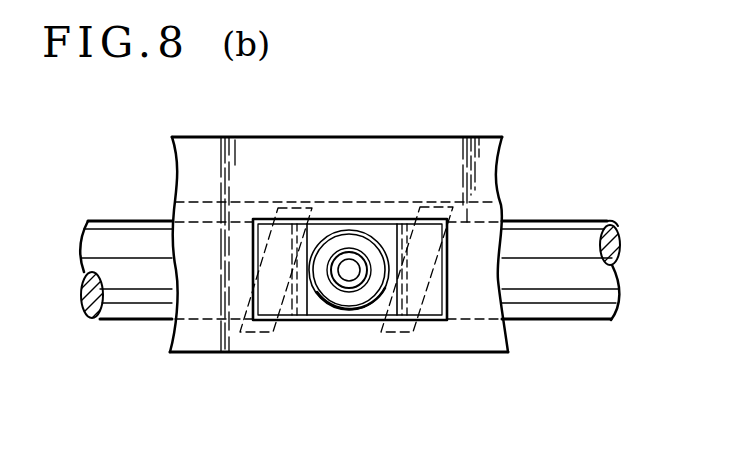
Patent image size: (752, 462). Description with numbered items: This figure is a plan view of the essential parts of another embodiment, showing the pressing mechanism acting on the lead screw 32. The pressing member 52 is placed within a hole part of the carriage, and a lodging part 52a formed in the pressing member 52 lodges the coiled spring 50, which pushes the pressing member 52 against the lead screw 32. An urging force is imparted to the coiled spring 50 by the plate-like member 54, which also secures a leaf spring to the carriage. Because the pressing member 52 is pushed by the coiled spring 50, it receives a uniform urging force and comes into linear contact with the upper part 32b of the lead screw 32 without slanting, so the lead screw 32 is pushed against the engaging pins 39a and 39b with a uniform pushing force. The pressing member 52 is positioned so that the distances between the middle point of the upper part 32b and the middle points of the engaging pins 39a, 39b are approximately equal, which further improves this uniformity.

The lead screw 32 is at (562, 252).
The upper part of the lead screw 32b is at (349, 274).
The engaging pin 39a is at (256, 337).
The engaging pin 39b is at (410, 338).
The coiled spring 50 is at (378, 247).
The pressing member 52 is at (258, 218).
The lodging part 52a is at (318, 228).
The plate-like member 54 is at (403, 168).